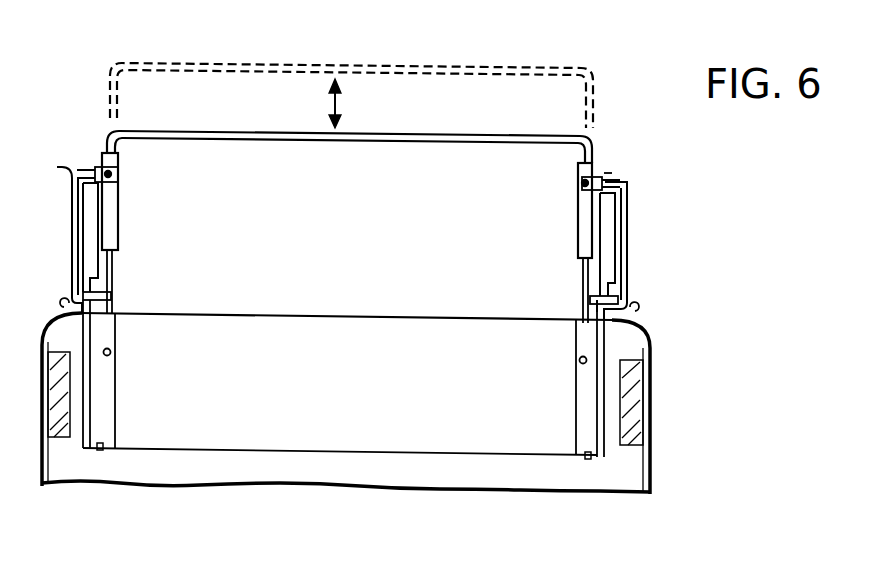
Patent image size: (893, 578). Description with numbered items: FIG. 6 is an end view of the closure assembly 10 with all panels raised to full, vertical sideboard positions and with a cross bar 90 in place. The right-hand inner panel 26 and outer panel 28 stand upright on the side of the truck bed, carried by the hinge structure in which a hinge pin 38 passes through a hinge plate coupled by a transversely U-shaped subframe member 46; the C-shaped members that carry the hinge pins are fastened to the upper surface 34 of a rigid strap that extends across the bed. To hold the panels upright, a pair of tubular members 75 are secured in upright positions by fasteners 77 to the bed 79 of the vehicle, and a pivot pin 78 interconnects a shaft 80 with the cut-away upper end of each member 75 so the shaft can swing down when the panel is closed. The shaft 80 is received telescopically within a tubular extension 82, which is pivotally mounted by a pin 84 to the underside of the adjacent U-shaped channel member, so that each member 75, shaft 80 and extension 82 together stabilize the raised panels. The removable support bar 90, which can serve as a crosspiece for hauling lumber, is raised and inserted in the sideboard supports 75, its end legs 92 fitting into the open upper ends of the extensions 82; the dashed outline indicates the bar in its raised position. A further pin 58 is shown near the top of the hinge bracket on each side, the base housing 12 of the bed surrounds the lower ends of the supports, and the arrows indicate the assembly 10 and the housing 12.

The closure assembly 10 is at (647, 283).
The base housing 12 is at (655, 355).
The inner panel 26 is at (78, 232).
The outer panel 28 is at (72, 200).
The upper surface 34 is at (86, 317).
The hinge pin 38 is at (106, 294).
The U-shaped subframe member 46 is at (88, 254).
The pivot pin 58 is at (75, 170).
The tubular member 75 is at (108, 418).
The fastener 77 is at (100, 451).
The pivot pin 78 is at (110, 356).
The bed 79 is at (341, 451).
The shaft 80 is at (113, 268).
The tubular extension 82 is at (118, 237).
The pin 84 is at (118, 173).
The cross bar 90 is at (480, 68).
The end leg 92 is at (110, 84).